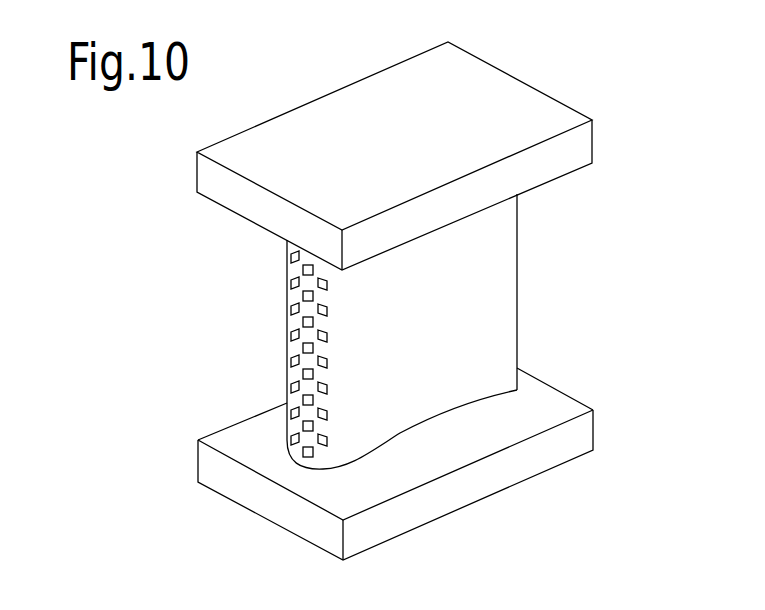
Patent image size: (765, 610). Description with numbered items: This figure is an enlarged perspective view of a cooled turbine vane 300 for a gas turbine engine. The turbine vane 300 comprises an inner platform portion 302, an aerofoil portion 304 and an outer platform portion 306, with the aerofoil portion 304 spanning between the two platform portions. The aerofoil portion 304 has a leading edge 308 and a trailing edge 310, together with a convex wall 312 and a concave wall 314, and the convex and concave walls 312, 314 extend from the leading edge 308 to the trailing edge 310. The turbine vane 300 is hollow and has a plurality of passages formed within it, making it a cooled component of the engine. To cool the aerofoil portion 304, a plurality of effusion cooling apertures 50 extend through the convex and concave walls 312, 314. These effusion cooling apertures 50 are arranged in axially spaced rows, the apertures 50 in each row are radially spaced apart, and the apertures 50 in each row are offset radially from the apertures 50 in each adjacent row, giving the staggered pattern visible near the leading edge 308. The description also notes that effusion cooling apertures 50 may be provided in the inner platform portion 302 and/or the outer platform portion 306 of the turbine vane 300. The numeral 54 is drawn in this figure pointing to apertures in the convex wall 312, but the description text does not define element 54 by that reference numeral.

The turbine vane 300 is at (607, 251).
The inner platform portion 302 is at (543, 400).
The aerofoil portion 304 is at (497, 285).
The outer platform portion 306 is at (575, 150).
The leading edge 308 is at (287, 295).
The trailing edge 310 is at (518, 228).
The convex wall 312 is at (286, 268).
The concave wall 314 is at (433, 363).
The openings 54 is at (307, 347).
The effusion cooling apertures 50 is at (290, 363).